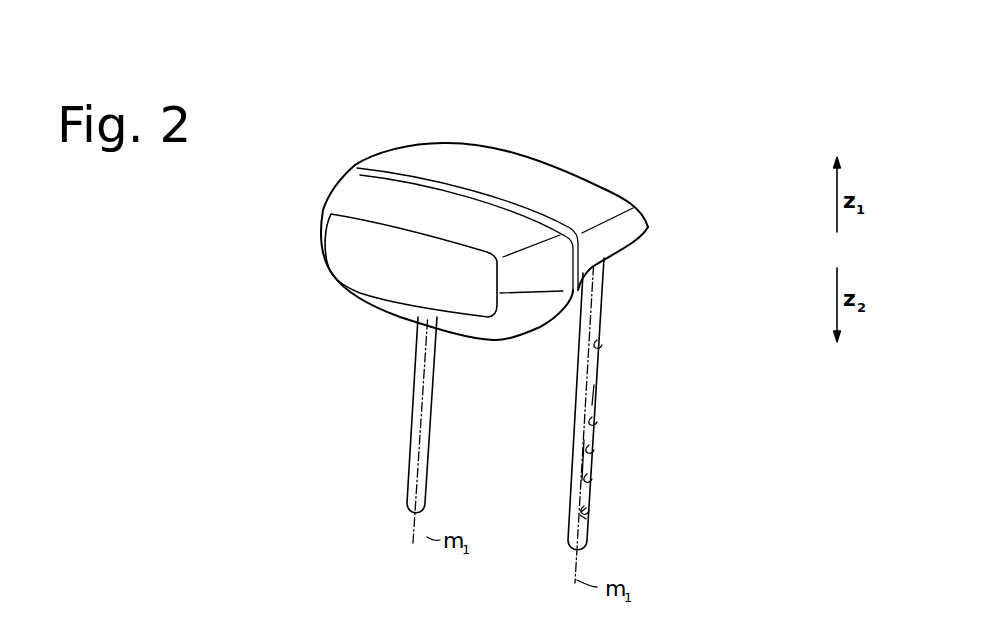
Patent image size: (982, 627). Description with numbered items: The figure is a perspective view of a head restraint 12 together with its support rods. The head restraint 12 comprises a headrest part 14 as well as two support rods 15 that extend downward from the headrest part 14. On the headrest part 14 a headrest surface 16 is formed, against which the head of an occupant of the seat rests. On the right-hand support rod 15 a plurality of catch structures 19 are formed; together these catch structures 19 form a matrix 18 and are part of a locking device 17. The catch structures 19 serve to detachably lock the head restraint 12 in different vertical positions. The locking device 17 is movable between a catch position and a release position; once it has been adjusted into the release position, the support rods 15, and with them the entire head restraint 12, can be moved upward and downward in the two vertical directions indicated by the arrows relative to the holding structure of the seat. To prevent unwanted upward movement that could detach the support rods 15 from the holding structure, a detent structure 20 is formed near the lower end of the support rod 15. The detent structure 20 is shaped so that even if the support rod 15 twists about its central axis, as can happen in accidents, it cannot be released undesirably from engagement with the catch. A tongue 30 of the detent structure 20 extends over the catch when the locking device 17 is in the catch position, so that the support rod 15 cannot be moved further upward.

The head restraint 12 is at (336, 148).
The headrest part 14 is at (547, 268).
The support rods 15 is at (418, 362).
The headrest surface 16 is at (359, 262).
The locking device 17 is at (618, 390).
The matrix 18 is at (577, 462).
The catch structures 19 is at (612, 336).
The detent structure 20 is at (606, 512).
The tongue 30 is at (604, 523).